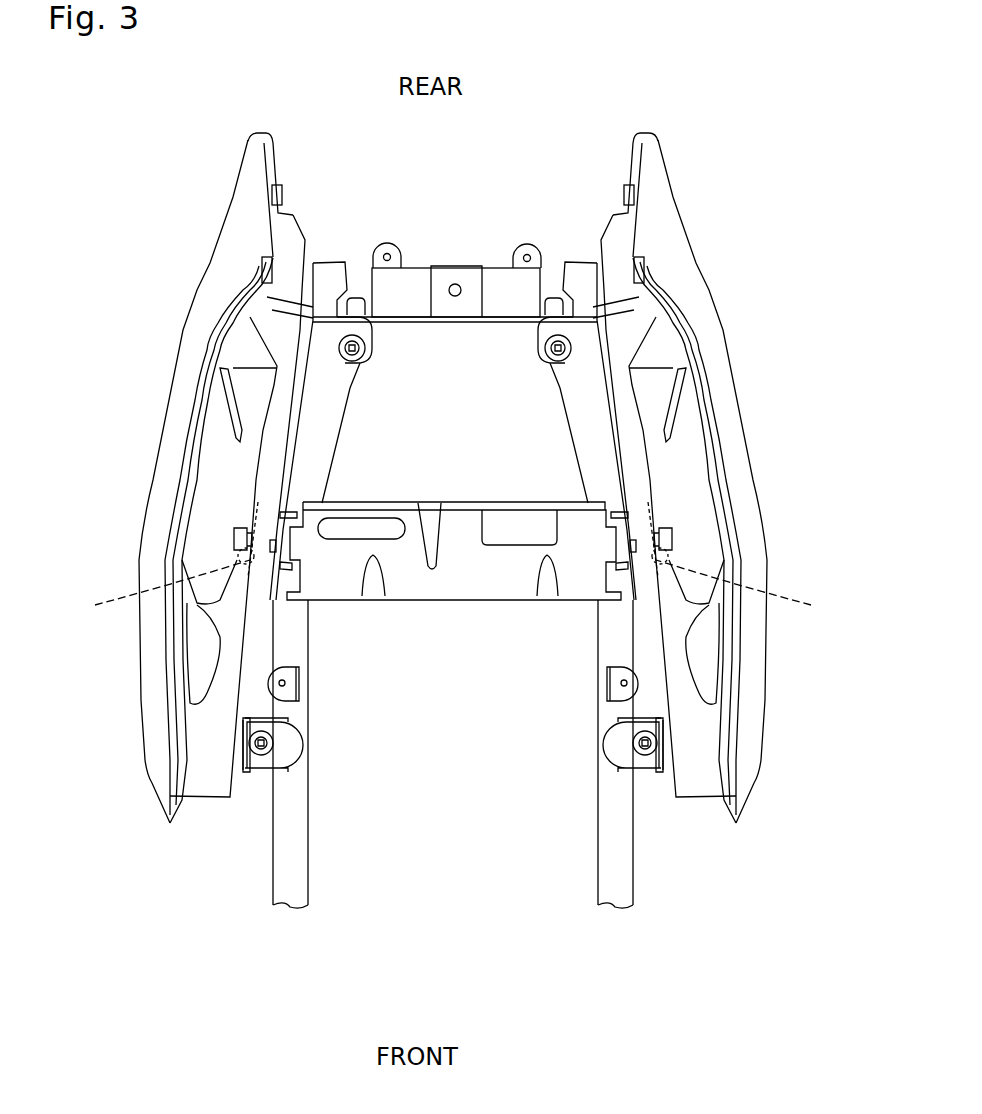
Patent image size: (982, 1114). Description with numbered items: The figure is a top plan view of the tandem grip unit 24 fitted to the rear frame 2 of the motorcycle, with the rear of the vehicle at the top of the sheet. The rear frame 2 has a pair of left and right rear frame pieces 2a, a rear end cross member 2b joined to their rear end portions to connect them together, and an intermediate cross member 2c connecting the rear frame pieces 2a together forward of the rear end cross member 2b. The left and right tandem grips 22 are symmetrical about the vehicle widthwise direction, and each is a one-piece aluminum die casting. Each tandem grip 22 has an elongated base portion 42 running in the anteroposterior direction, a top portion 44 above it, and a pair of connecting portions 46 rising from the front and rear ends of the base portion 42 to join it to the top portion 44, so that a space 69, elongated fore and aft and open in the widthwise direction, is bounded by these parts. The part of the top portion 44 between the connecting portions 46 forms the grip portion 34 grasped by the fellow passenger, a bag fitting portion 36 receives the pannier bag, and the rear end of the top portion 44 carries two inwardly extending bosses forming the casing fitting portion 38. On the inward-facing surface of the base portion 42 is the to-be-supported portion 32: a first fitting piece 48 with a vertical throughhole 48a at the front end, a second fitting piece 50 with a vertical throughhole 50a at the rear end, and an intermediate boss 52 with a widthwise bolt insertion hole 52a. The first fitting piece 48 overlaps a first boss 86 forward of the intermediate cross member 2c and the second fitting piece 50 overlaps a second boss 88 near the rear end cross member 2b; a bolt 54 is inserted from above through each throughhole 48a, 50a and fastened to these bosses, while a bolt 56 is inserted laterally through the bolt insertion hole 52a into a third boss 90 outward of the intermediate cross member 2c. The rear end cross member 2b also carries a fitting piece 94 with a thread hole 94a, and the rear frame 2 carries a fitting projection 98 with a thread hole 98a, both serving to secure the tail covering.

The rear frame 2 is at (453, 930).
The rear frame piece 2a is at (604, 856).
The rear end cross member 2b is at (497, 282).
The intermediate cross member 2c is at (465, 518).
The tandem grip 22 is at (148, 259).
The tandem grip unit 24 is at (422, 236).
The to-be-supported portion 32 is at (475, 646).
The grip portion 34 is at (157, 470).
The bag fitting portion 36 is at (250, 387).
The casing fitting portion 38 is at (263, 270).
The base portion 42 is at (257, 457).
The top portion 44 is at (143, 654).
The connecting portion 46 is at (288, 272).
The first fitting piece 48 is at (619, 752).
The throughhole 48a is at (277, 741).
The second fitting piece 50 is at (556, 372).
The throughhole 50a is at (353, 365).
The boss 52 is at (240, 560).
The bolt insertion hole 52a is at (442, 590).
The bolt 54 is at (362, 335).
The bolt 56 is at (234, 536).
The space 69 is at (240, 497).
The first boss 86 is at (280, 774).
The second boss 88 is at (538, 330).
The third boss 90 is at (295, 505).
The fitting piece 94 is at (401, 257).
The thread hole 94a is at (402, 255).
The fitting projection 98 is at (295, 663).
The thread hole 98a is at (285, 683).